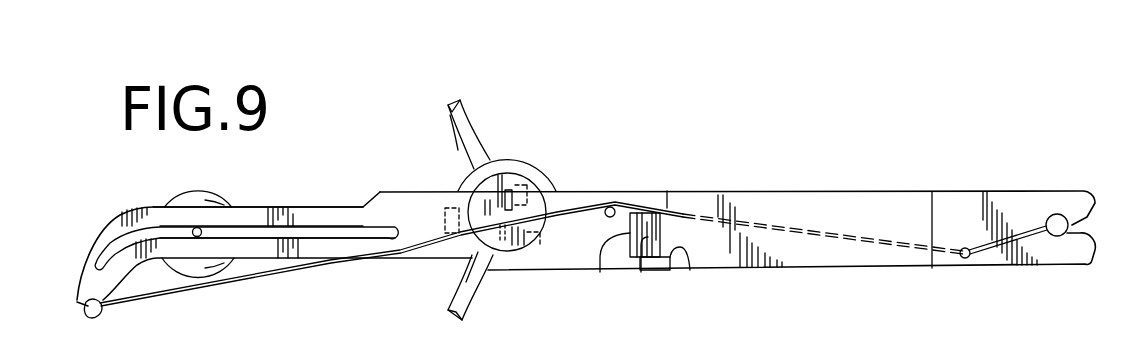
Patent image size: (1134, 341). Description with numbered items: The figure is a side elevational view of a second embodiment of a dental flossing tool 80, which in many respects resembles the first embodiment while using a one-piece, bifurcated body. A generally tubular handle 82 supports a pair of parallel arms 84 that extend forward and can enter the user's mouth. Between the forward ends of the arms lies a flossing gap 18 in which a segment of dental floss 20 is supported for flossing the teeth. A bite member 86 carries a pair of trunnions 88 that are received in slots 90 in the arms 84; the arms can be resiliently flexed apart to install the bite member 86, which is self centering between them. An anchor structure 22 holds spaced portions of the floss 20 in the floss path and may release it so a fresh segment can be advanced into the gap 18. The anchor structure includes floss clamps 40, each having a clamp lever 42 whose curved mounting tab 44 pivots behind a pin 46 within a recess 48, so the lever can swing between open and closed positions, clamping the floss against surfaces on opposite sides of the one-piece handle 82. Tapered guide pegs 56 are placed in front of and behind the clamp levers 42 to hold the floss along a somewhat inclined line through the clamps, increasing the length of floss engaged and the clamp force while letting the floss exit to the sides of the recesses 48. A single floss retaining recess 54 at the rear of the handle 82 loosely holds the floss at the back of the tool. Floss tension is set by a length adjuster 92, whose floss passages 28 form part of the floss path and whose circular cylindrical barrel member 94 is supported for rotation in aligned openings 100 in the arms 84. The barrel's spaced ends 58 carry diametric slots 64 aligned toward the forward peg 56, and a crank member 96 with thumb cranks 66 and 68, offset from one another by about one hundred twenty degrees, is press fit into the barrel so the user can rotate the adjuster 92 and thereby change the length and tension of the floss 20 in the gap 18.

The flossing gap 18 is at (84, 313).
The dental floss 20 is at (303, 262).
The anchor structure 22 is at (855, 164).
The floss passages 28 is at (540, 222).
The floss clamps 40 is at (805, 190).
The clamp lever 42 is at (913, 198).
The curved mounting tab 44 is at (600, 272).
The pin 46 is at (641, 272).
The recess 48 is at (690, 272).
The floss retaining recess 54 is at (1063, 236).
The guide pegs 56 is at (614, 207).
The ends 58 is at (515, 185).
The diametric slots 64 is at (522, 222).
The thumb crank 66 is at (455, 110).
The thumb crank 68 is at (458, 313).
The dental flossing tool 80 is at (699, 153).
The handle 82 is at (957, 198).
The arms 84 is at (352, 207).
The bite member 86 is at (215, 192).
The trunnions 88 is at (196, 227).
The slots 90 is at (298, 227).
The length adjuster 92 is at (513, 256).
The barrel member 94 is at (522, 182).
The crank member 96 is at (456, 145).
The openings 100 is at (476, 268).